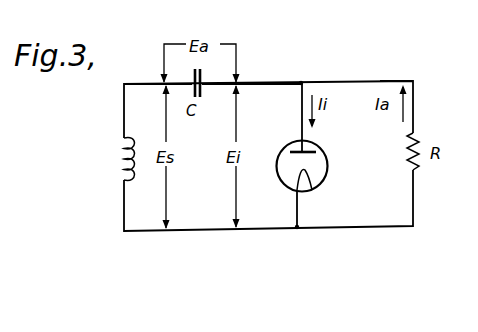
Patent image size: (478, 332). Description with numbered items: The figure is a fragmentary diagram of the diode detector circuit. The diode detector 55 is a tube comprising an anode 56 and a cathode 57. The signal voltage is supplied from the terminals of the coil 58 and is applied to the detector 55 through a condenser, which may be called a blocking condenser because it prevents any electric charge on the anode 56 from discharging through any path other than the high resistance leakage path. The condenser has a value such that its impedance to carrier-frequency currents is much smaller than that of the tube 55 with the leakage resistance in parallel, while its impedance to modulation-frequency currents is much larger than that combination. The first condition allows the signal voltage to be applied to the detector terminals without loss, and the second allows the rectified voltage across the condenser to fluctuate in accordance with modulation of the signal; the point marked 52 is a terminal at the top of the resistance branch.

The output terminal 52 is at (396, 80).
The diode detector 55 is at (278, 172).
The anode 56 is at (316, 150).
The cathode 57 is at (311, 177).
The coil 58 is at (118, 152).